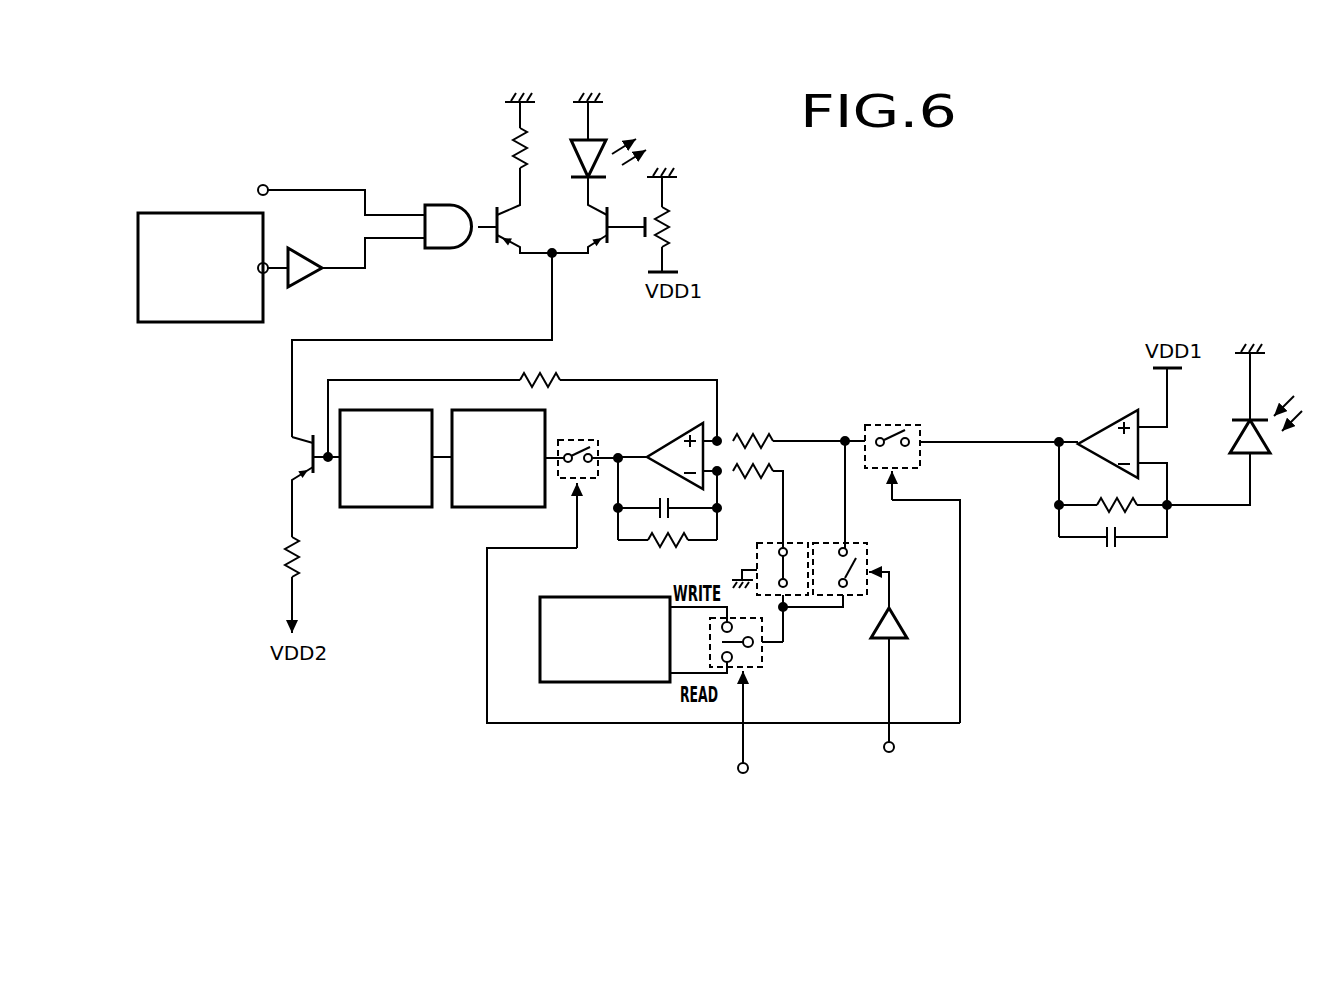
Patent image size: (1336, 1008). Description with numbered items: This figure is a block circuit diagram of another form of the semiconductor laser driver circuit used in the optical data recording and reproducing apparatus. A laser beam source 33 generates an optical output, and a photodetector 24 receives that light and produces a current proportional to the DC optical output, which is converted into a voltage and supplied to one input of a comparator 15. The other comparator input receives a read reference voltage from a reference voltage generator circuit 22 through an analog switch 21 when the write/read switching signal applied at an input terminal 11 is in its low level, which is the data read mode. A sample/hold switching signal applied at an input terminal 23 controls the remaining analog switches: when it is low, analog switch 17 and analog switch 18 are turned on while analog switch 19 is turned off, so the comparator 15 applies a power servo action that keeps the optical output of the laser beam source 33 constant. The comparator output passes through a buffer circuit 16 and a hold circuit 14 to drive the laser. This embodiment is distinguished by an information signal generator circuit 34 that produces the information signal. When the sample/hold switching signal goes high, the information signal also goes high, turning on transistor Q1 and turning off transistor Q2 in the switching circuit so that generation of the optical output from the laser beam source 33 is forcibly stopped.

The input terminal 11 is at (738, 768).
The hold circuit 14 is at (547, 428).
The comparator 15 is at (718, 420).
The buffer circuit 16 is at (370, 508).
The analog switch 17 is at (595, 438).
The analog switch 18 is at (921, 462).
The analog switch 19 is at (866, 540).
The analog switch 21 is at (764, 660).
The reference voltage generator circuit 22 is at (540, 655).
The input terminal 23 is at (333, 183).
The photodetector 24 is at (1235, 390).
The laser beam source 33 is at (605, 130).
The information signal generator circuit 34 is at (265, 230).
The transistor Q1 is at (510, 248).
The transistor Q2 is at (597, 247).